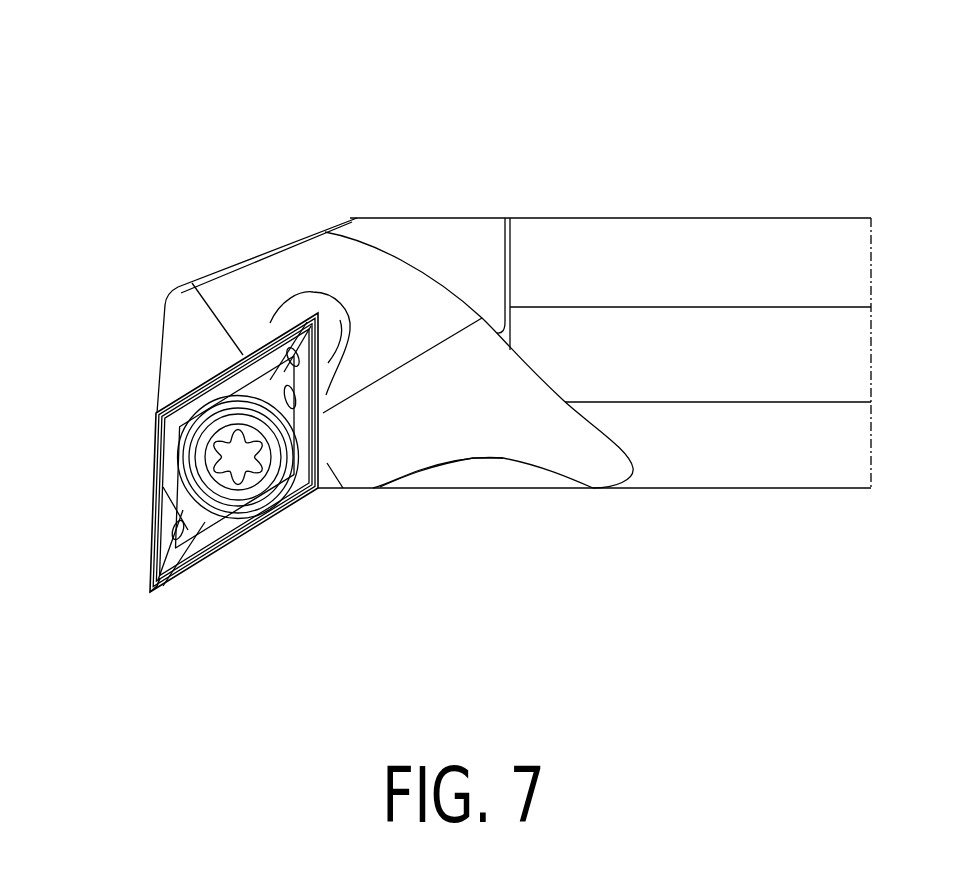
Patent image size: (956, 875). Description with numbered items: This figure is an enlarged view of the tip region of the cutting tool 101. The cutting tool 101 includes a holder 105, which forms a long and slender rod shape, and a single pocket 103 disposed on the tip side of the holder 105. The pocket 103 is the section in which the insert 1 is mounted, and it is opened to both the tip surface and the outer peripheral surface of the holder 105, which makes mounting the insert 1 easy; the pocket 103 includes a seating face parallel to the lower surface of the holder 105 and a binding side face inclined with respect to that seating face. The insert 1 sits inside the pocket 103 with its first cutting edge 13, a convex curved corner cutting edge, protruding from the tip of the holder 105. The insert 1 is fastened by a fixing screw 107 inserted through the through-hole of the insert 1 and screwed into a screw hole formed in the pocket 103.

The cutting tool 101 is at (321, 126).
The pocket 103 is at (152, 468).
The holder 105 is at (733, 252).
The fixing screw 107 is at (245, 465).
The insert 1 is at (200, 523).
The first cutting edge 13 is at (153, 598).